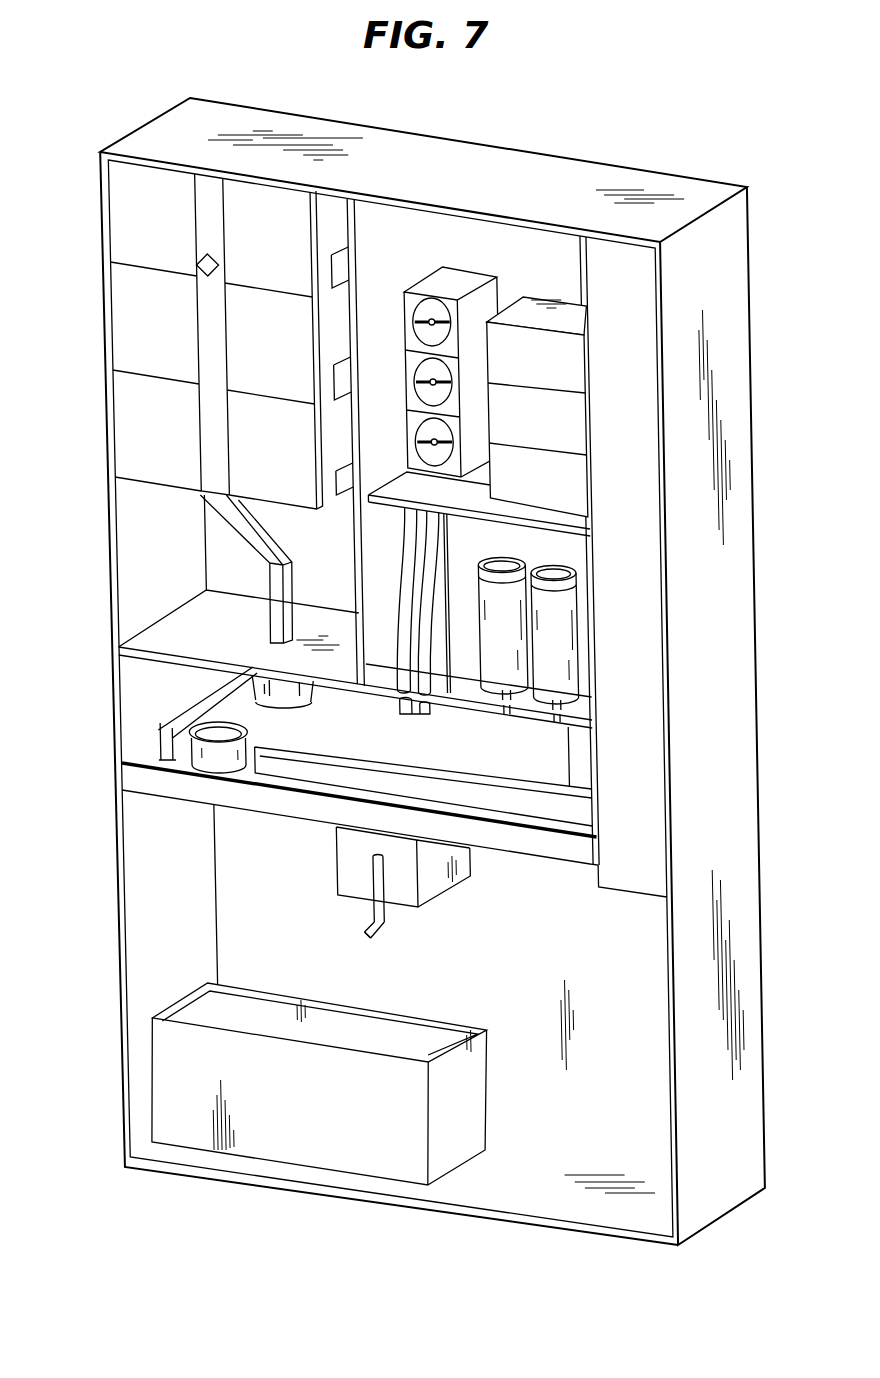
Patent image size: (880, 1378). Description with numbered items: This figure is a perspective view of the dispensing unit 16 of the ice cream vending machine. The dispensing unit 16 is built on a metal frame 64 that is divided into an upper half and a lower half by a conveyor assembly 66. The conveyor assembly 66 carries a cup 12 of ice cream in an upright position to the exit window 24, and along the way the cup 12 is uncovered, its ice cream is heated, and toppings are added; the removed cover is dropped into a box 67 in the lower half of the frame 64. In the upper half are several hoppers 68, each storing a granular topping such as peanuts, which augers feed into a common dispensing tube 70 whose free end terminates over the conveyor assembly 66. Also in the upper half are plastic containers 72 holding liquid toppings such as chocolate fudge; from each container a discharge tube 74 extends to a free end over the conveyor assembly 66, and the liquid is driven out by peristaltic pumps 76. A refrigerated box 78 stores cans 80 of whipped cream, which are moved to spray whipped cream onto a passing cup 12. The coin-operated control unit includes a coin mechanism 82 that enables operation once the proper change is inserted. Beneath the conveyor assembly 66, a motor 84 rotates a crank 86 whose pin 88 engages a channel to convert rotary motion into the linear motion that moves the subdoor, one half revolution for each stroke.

The dispensing unit 16 is at (211, 100).
The metal frame 64 is at (101, 148).
The hoppers 68 is at (156, 228).
The common dispensing tube 70 is at (264, 611).
The peristaltic pumps 76 is at (446, 277).
The plastic containers 72 is at (543, 371).
The refrigerated box 78 is at (560, 546).
The cans 80 is at (508, 641).
The discharge tube 74 is at (385, 706).
The exit window 24 is at (566, 750).
The coin mechanism 82 is at (632, 774).
The cup 12 is at (167, 777).
The conveyor assembly 66 is at (165, 789).
The motor 84 is at (324, 840).
The crank 86 is at (354, 883).
The pin 88 is at (328, 940).
The box 67 is at (286, 1132).